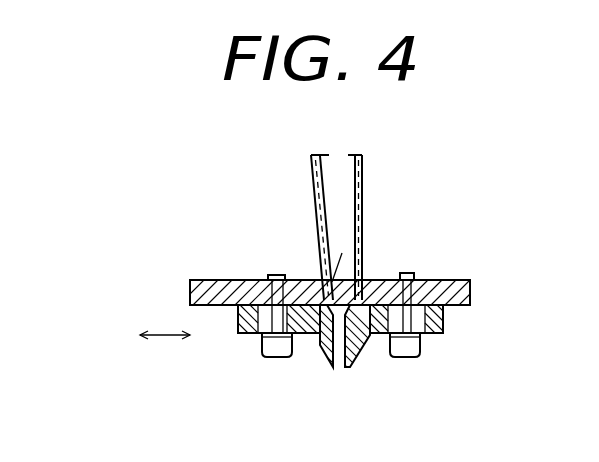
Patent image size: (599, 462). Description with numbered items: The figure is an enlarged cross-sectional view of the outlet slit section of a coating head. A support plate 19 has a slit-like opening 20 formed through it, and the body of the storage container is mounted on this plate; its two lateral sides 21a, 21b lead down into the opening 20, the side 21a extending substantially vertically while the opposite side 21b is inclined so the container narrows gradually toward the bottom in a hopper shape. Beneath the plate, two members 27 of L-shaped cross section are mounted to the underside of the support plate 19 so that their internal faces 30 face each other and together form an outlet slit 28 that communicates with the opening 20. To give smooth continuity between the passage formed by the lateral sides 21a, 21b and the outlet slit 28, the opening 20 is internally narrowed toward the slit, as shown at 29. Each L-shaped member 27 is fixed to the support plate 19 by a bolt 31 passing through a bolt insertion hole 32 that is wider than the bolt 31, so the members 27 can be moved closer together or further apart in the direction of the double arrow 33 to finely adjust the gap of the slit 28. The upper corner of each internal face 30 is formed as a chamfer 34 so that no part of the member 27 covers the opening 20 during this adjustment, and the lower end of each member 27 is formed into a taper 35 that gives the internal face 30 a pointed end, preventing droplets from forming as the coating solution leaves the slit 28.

The support plate 19 is at (208, 285).
The opening 20 is at (358, 279).
The lateral side 21a is at (363, 187).
The opposite lateral side 21b is at (317, 190).
The L-shaped member 27 is at (328, 363).
The outlet slit 28 is at (391, 373).
The narrowing of the opening 29 is at (342, 253).
The internal face 30 is at (338, 368).
The bolt 31 is at (268, 352).
The bolt insertion hole 32 is at (250, 332).
The double arrow 33 is at (168, 330).
The chamfer 34 is at (317, 333).
The taper 35 is at (356, 362).